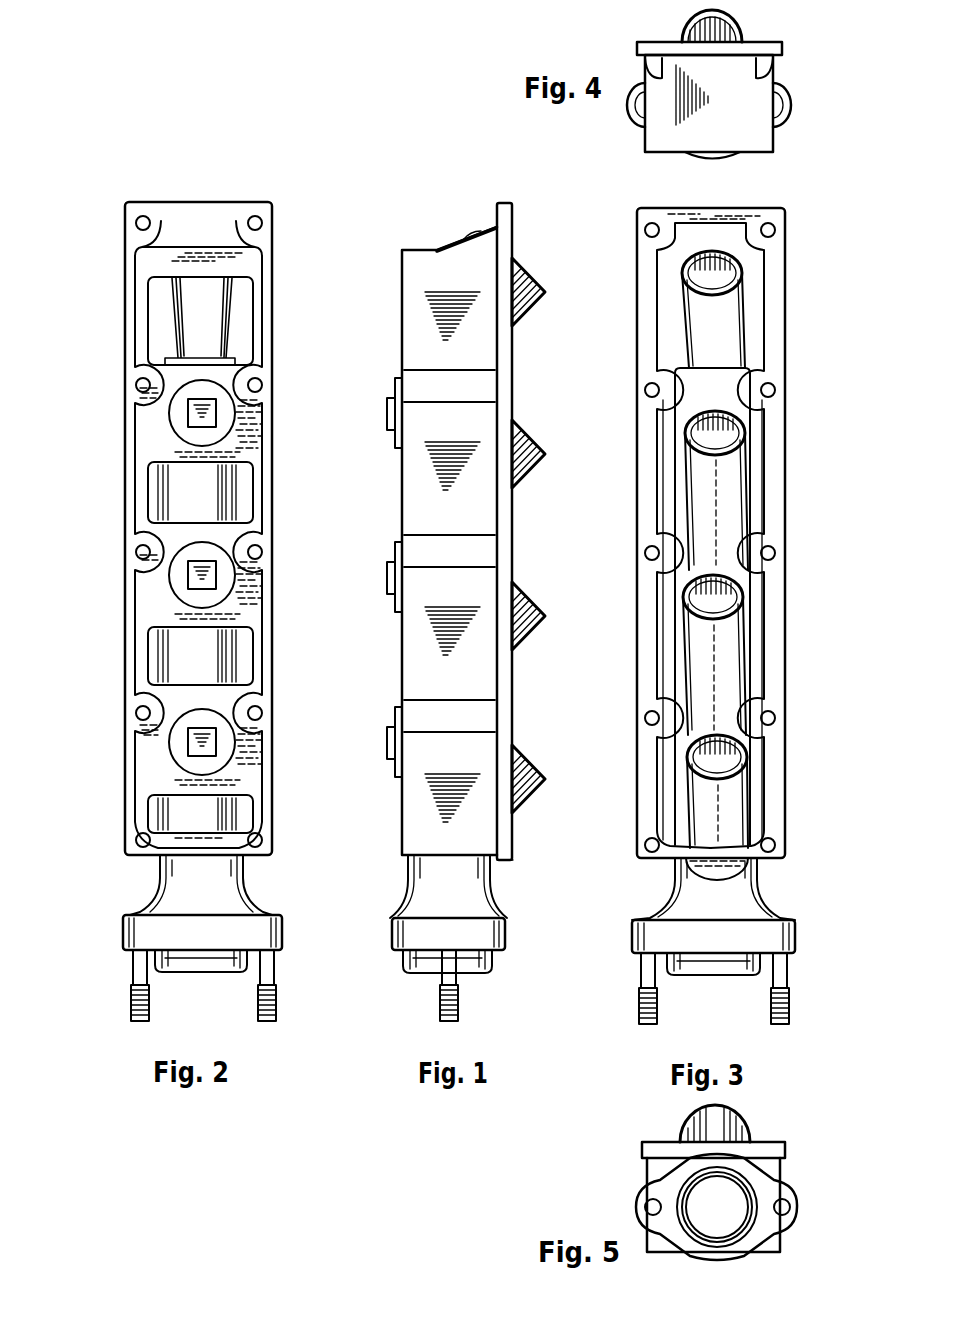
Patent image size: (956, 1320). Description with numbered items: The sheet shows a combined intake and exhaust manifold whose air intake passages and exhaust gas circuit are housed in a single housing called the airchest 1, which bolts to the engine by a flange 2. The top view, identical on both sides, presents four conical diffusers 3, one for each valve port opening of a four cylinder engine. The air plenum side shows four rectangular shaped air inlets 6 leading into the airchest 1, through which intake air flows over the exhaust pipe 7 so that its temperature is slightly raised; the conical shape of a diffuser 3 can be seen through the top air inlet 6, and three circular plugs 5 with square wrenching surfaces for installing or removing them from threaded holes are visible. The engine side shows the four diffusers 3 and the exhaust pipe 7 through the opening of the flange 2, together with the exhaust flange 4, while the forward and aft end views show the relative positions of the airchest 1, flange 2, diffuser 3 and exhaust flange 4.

In FIG. 2, the airchest 1 is at (195, 247).
In FIG. 1, the airchest 1 is at (425, 249).
In FIG. 3, the airchest 1 is at (710, 540).
In FIG. 4, the airchest 1 is at (747, 133).
In FIG. 5, the airchest 1 is at (782, 1172).
In FIG. 2, the flange 2 is at (245, 202).
In FIG. 1, the flange 2 is at (502, 203).
In FIG. 3, the flange 2 is at (785, 270).
In FIG. 4, the flange 2 is at (782, 49).
In FIG. 5, the flange 2 is at (787, 1147).
In FIG. 2, the diffuser 3 is at (195, 330).
In FIG. 1, the diffuser 3 is at (518, 765).
In FIG. 3, the diffuser 3 is at (715, 810).
In FIG. 4, the diffuser 3 is at (743, 32).
In FIG. 5, the diffuser 3 is at (718, 1132).
In FIG. 2, the exhaust flange 4 is at (283, 936).
In FIG. 1, the exhaust flange 4 is at (505, 938).
In FIG. 3, the exhaust flange 4 is at (797, 940).
In FIG. 4, the exhaust flange 4 is at (788, 102).
In FIG. 5, the exhaust flange 4 is at (797, 1200).
In FIG. 2, the plug 5 is at (178, 412).
In FIG. 1, the plug 5 is at (387, 742).
In FIG. 2, the air inlet 6 is at (247, 805).
In FIG. 2, the exhaust pipe 7 is at (195, 818).
In FIG. 3, the exhaust pipe 7 is at (708, 712).